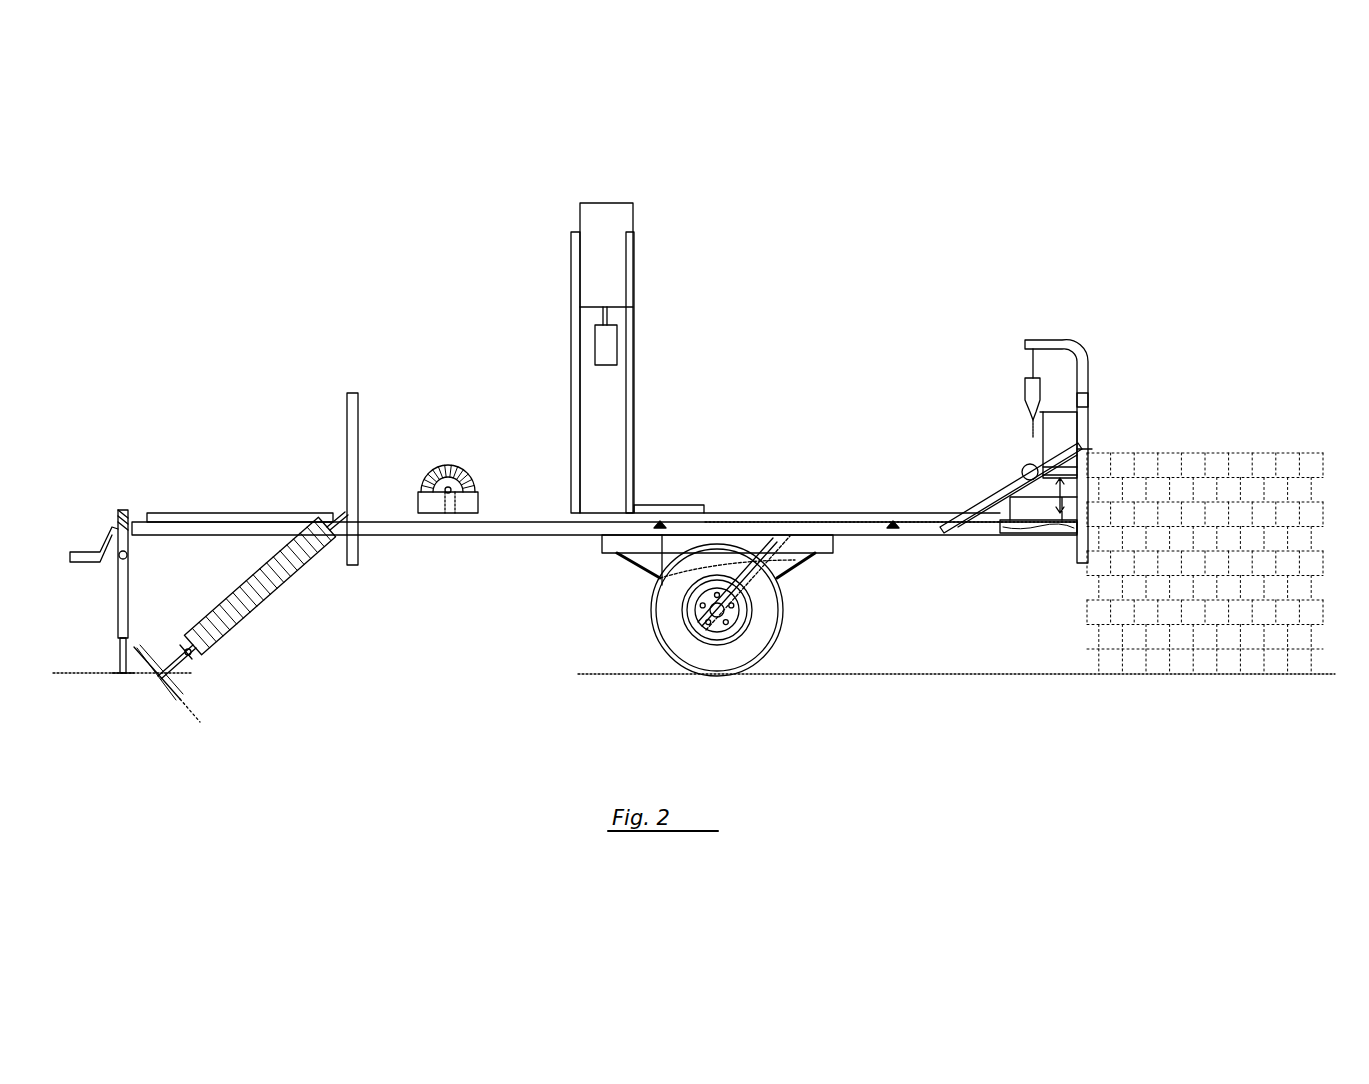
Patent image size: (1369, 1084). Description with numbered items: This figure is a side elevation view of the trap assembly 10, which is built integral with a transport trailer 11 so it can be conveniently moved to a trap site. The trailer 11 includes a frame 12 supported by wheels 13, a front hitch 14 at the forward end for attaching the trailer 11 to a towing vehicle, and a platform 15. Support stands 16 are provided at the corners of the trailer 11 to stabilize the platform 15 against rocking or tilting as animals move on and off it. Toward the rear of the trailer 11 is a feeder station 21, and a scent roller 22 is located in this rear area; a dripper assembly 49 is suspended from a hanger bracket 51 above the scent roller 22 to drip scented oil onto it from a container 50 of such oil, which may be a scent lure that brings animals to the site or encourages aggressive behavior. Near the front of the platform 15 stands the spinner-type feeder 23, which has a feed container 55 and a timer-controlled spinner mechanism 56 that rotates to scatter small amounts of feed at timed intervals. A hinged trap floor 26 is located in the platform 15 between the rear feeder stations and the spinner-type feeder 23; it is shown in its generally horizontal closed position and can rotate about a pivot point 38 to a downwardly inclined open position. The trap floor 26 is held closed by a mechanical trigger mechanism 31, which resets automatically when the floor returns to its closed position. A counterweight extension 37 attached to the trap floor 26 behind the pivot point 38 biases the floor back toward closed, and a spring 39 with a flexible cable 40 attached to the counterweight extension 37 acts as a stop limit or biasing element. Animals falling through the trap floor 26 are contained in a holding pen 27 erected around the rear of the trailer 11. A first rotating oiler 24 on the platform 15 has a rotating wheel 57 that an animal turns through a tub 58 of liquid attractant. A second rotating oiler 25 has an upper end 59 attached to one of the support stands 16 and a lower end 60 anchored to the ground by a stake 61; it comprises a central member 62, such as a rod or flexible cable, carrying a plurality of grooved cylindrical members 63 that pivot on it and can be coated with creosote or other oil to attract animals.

The trap assembly 10 is at (282, 226).
The transport trailer 11 is at (208, 515).
The frame 12 is at (420, 537).
The wheels 13 is at (674, 642).
The front hitch 14 is at (80, 552).
The platform 15 is at (757, 515).
The support stands 16 is at (351, 393).
The feeder station 21 is at (1027, 502).
The scent roller 22 is at (1023, 466).
The spinner-type feeder 23 is at (597, 341).
The first rotating oiler 24 is at (420, 446).
The second rotating oiler 25 is at (231, 599).
The hinged trap floor 26 is at (892, 524).
The holding pen 27 is at (1222, 465).
The mechanical trigger mechanism 31 is at (1010, 535).
The counterweight extension 37 is at (777, 557).
The pivot point 38 is at (795, 520).
The spring 39 is at (655, 597).
The flexible cable 40 is at (655, 628).
The dripper assembly 49 is at (1030, 410).
The container 50 is at (1028, 380).
The hanger bracket 51 is at (1075, 343).
The feed container 55 is at (620, 223).
The timer-controlled spinner mechanism 56 is at (612, 342).
The rotating wheel 57 is at (443, 465).
The tub 58 is at (428, 503).
The upper end 59 is at (342, 516).
The lower end 60 is at (173, 658).
The stake 61 is at (168, 675).
The central member 62 is at (190, 652).
The cylindrical members 63 is at (293, 577).